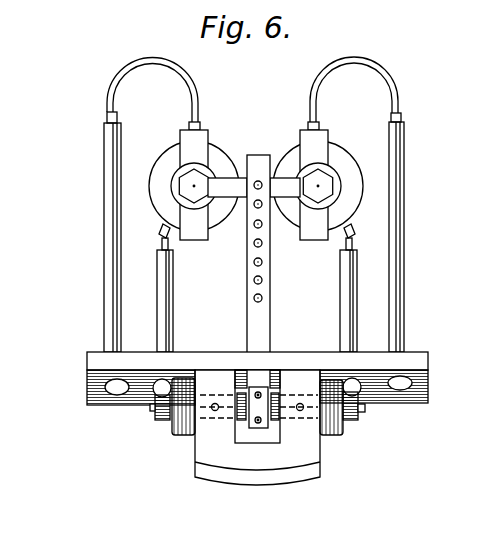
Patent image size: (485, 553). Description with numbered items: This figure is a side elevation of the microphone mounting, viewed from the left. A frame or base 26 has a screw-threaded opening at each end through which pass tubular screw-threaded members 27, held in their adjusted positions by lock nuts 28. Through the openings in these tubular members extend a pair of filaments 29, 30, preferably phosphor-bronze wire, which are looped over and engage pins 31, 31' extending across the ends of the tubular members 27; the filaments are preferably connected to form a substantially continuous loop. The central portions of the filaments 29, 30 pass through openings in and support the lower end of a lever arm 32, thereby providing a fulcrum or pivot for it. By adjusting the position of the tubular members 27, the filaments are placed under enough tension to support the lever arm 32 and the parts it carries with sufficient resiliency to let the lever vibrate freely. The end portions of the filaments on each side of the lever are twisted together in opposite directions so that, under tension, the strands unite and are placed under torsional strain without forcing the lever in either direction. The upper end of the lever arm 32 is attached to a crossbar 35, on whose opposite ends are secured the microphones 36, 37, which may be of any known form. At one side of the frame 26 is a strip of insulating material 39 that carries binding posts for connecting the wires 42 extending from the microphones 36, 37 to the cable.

The frame or base 26 is at (197, 453).
The tubular screw-threaded members 27 is at (353, 421).
The lock nuts 28 is at (176, 434).
The filament 29 is at (145, 405).
The filament 30 is at (273, 432).
The pin 31 is at (140, 414).
The pin 31' is at (384, 416).
The lever arm 32 is at (270, 311).
The crossbar 35 is at (277, 177).
The microphone 36 is at (352, 164).
The microphone 37 is at (164, 153).
The strip of insulating material 39 is at (428, 360).
The wires 42 is at (104, 173).